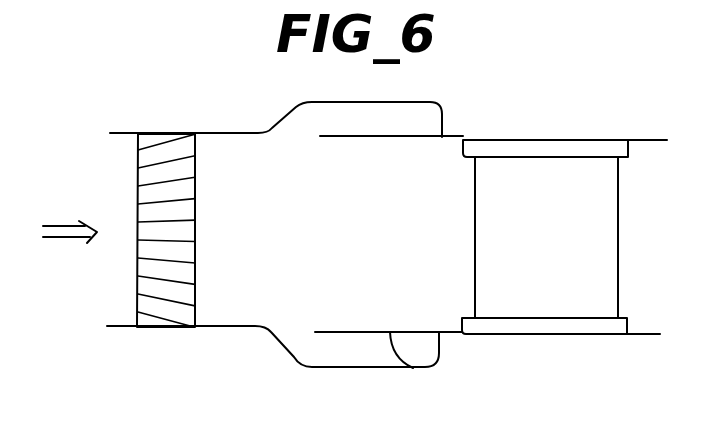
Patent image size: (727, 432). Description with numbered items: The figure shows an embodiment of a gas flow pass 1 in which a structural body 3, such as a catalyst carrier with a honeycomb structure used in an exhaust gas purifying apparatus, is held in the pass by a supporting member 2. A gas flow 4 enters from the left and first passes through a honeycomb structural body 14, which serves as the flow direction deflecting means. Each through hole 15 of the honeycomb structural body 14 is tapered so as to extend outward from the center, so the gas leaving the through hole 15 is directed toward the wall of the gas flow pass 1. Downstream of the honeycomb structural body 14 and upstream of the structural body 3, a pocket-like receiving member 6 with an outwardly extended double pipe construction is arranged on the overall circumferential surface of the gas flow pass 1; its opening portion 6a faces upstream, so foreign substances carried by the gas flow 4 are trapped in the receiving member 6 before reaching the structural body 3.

The gas flow pass 1 is at (462, 136).
The supporting member 2 is at (603, 150).
The structural body 3 is at (607, 254).
The gas flow 4 is at (63, 240).
The pocket-like receiving member 6 is at (395, 350).
The opening portion 6a is at (318, 347).
The honeycomb structural body 14 is at (172, 150).
The through hole 15 is at (155, 292).